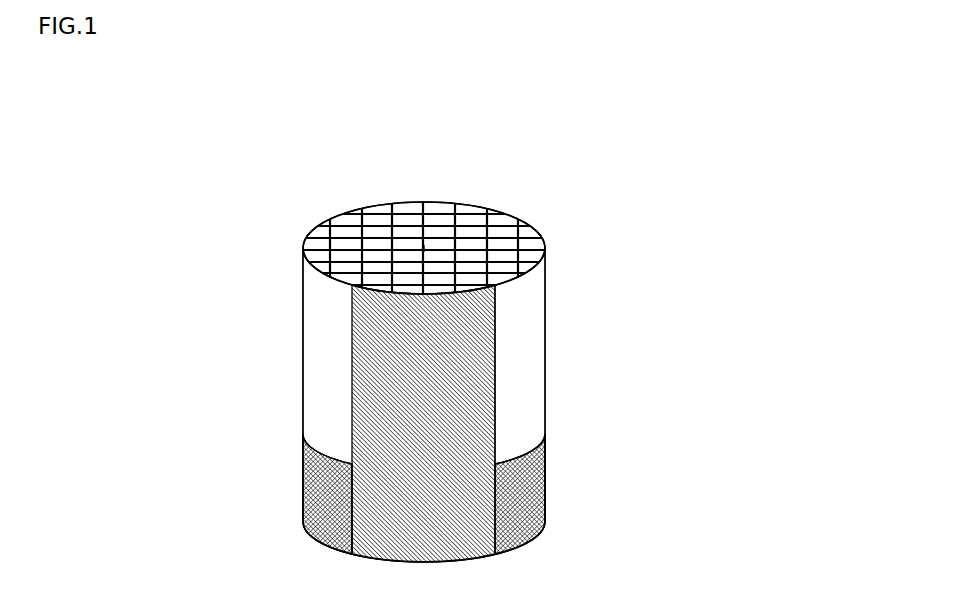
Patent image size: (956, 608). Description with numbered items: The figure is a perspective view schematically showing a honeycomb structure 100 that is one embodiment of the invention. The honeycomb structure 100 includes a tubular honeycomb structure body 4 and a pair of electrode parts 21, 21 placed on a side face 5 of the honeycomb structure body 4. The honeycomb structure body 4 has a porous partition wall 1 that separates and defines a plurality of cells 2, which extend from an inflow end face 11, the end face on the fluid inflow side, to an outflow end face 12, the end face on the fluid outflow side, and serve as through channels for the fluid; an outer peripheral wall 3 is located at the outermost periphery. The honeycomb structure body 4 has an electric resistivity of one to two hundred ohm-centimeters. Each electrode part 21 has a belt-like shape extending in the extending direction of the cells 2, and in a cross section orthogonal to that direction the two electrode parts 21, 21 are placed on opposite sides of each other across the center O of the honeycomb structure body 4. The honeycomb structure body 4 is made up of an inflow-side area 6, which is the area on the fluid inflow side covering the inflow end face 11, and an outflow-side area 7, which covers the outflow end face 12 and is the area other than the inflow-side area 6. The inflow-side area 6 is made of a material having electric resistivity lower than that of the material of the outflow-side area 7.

The honeycomb structure 100 is at (742, 92).
The partition wall 1 is at (488, 210).
The cells 2 is at (343, 222).
The electrode parts 21 is at (438, 201).
The outflow end face 12 is at (312, 235).
The inflow end face 11 is at (535, 533).
The center O is at (426, 249).
The honeycomb structure body 4 is at (547, 289).
The outer peripheral wall 3 is at (537, 350).
The side face 5 is at (530, 423).
The outflow-side area 7 is at (299, 250).
The inflow-side area 6 is at (299, 437).